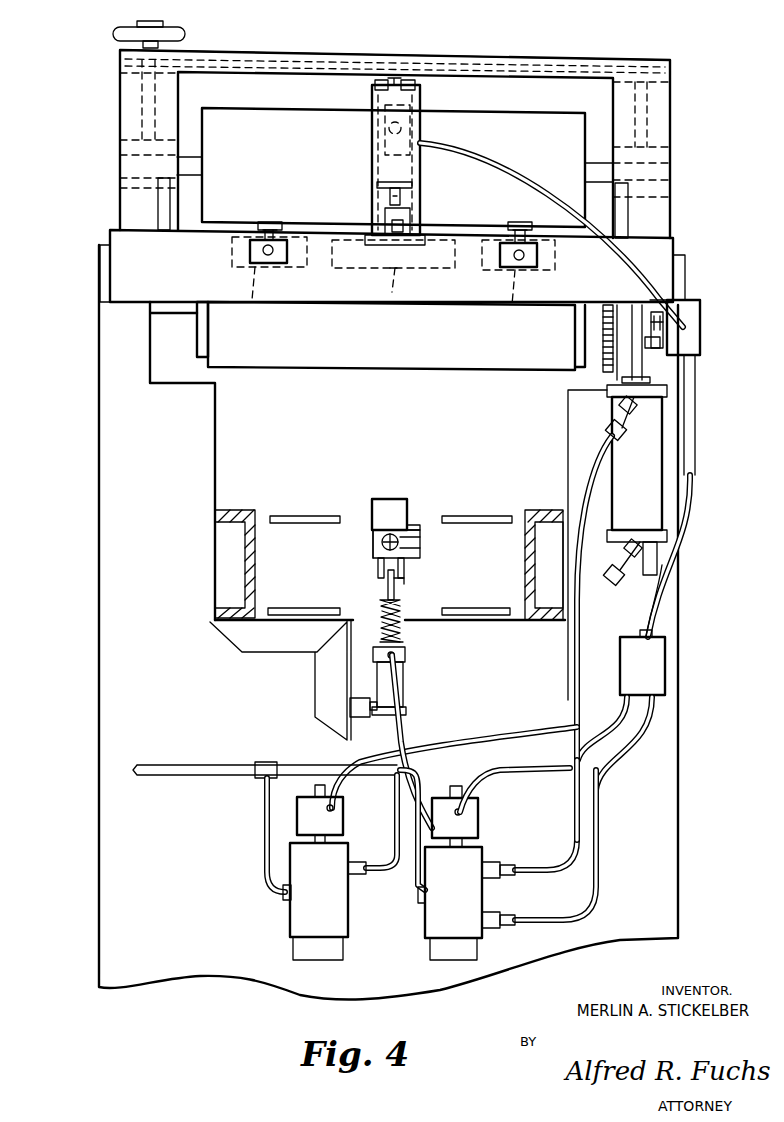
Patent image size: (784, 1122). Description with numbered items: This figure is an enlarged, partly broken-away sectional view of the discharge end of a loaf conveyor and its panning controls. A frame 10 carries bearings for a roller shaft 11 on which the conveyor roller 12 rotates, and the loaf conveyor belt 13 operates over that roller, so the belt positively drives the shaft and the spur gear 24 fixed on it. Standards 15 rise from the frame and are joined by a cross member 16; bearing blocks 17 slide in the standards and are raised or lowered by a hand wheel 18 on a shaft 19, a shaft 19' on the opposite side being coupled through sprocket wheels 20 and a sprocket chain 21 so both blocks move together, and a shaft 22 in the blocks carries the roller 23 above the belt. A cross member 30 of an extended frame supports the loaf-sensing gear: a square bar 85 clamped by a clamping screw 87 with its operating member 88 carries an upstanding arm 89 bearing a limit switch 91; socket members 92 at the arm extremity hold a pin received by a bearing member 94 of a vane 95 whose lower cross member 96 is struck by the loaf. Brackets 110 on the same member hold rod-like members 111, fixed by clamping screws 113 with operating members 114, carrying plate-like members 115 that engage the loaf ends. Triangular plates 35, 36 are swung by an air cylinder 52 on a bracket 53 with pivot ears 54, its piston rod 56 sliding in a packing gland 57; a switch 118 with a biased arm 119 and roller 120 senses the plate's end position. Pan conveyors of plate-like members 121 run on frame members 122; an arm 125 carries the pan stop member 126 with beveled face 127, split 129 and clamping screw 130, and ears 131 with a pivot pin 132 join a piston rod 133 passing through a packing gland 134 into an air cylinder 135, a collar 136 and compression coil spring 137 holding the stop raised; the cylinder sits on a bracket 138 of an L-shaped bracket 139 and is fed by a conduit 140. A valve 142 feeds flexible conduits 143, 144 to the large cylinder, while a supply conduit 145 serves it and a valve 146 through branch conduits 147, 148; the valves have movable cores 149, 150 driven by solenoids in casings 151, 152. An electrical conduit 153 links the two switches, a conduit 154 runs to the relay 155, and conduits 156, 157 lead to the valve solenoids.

The frame 10 is at (105, 357).
The roller shaft 11 is at (150, 330).
The conveyor roller 12 is at (197, 350).
The loaf conveyor belt 13 is at (365, 372).
The standards 15 is at (128, 128).
The cross member 16 is at (597, 58).
The bearing blocks 17 is at (130, 181).
The hand wheel 18 is at (113, 32).
The shaft 19 is at (102, 100).
The shaft 19' is at (687, 112).
The sprocket wheels 20 is at (125, 60).
The sprocket chain 21 is at (322, 52).
The shaft 22 is at (186, 157).
The roller 23 is at (252, 110).
The spur gear 24 is at (603, 375).
The cross member 30 is at (150, 262).
The triangular plate 35 is at (628, 218).
The triangular plate 36 is at (158, 203).
The air cylinder 52 is at (652, 474).
The bracket 53 is at (660, 600).
The pivot ears 54 is at (658, 570).
The piston rod 56 is at (686, 392).
The packing gland 57 is at (696, 410).
The bar 85 is at (400, 222).
The clamping screw 87 is at (390, 198).
The operating member 88 is at (380, 184).
The upstanding arm 89 is at (420, 133).
The limit switch 91 is at (410, 108).
The socket members 92 is at (380, 82).
The bearing member 94 is at (396, 78).
The vane 95 is at (382, 162).
The cross member 96 is at (392, 293).
The brackets 110 is at (250, 258).
The rod-like members 111 is at (270, 256).
The clamping screws 113 is at (278, 234).
The operating members 114 is at (268, 222).
The plate-like members 115 is at (252, 305).
The switch 118 is at (700, 325).
The arm 119 is at (665, 340).
The roller 120 is at (690, 298).
The plate-like members 121 is at (295, 516).
The frame members 122 is at (232, 512).
The arm 125 is at (375, 535).
The pan stop member 126 is at (382, 542).
The beveled face 127 is at (390, 499).
The split 129 is at (400, 543).
The clamping screw 130 is at (413, 527).
The ears 131 is at (378, 566).
The pivot pin 132 is at (402, 580).
The piston rod 133 is at (388, 589).
The packing gland 134 is at (405, 655).
The air cylinder 135 is at (403, 680).
The collar 136 is at (402, 618).
The compression coil spring 137 is at (403, 640).
The bracket 138 is at (350, 707).
The L-shaped bracket 139 is at (265, 655).
The conduit 140 is at (400, 720).
The valve 142 is at (440, 920).
The flexible conduit 143 is at (600, 845).
The flexible conduit 144 is at (600, 800).
The conduit 145 is at (137, 770).
The valve 146 is at (295, 920).
The branch conduit 147 is at (393, 885).
The branch conduit 148 is at (262, 860).
The movable core 149 is at (456, 786).
The movable core 150 is at (320, 785).
The casing 151 is at (478, 815).
The casing 152 is at (297, 815).
The electrical conduit 153 is at (655, 280).
The electrical conduit 154 is at (694, 500).
The relay 155 is at (655, 680).
The conduit 156 is at (645, 720).
The conduit 157 is at (525, 727).